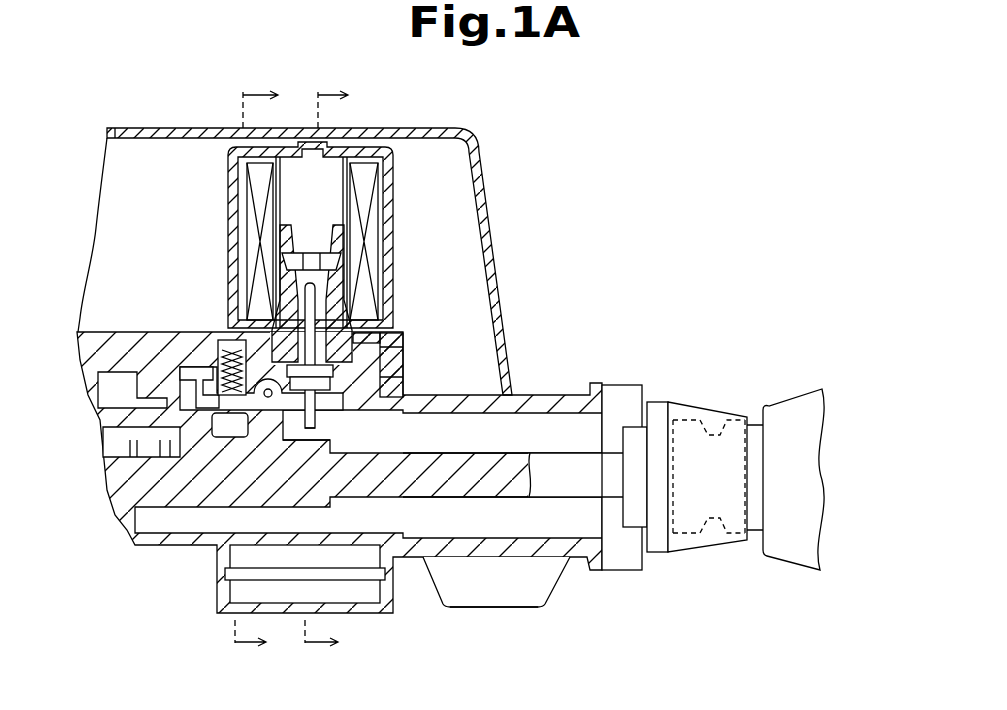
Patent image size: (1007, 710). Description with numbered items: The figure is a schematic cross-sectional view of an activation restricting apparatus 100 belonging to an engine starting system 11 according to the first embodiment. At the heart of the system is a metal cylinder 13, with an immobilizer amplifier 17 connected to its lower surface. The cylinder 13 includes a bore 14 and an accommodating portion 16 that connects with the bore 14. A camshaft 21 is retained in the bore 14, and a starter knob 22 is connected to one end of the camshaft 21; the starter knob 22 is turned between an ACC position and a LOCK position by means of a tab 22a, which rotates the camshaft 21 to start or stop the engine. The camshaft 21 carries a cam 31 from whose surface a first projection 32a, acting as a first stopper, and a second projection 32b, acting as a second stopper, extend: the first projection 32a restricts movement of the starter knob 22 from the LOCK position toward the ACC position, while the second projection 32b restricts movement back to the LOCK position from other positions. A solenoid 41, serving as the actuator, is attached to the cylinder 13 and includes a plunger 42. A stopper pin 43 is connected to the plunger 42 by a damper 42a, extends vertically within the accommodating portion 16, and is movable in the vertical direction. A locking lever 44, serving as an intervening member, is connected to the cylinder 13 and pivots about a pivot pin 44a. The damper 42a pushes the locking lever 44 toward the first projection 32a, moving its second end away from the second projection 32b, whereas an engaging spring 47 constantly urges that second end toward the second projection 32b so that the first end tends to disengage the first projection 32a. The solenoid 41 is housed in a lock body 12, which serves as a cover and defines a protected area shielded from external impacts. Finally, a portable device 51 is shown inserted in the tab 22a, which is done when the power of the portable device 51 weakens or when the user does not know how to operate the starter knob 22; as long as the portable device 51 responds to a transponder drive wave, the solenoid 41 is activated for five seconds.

The activation restricting apparatus 100 is at (527, 245).
The engine starting system 11 is at (384, 384).
The lock body 12 is at (430, 133).
The cylinder 13 is at (185, 541).
The bore 14 is at (545, 545).
The accommodating portion 16 is at (326, 370).
The immobilizer amplifier 17 is at (467, 597).
The camshaft 21 is at (471, 497).
The starter knob 22 is at (658, 550).
The tab 22a is at (695, 412).
The cam 31 is at (315, 508).
The first projection 32a is at (322, 436).
The second projection 32b is at (185, 462).
The solenoid 41 is at (395, 208).
The plunger 42 is at (322, 262).
The damper 42a is at (321, 390).
The stopper pin 43 is at (308, 430).
The locking lever 44 is at (205, 390).
The pivot pin 44a is at (268, 400).
The engaging spring 47 is at (215, 355).
The portable device 51 is at (796, 397).